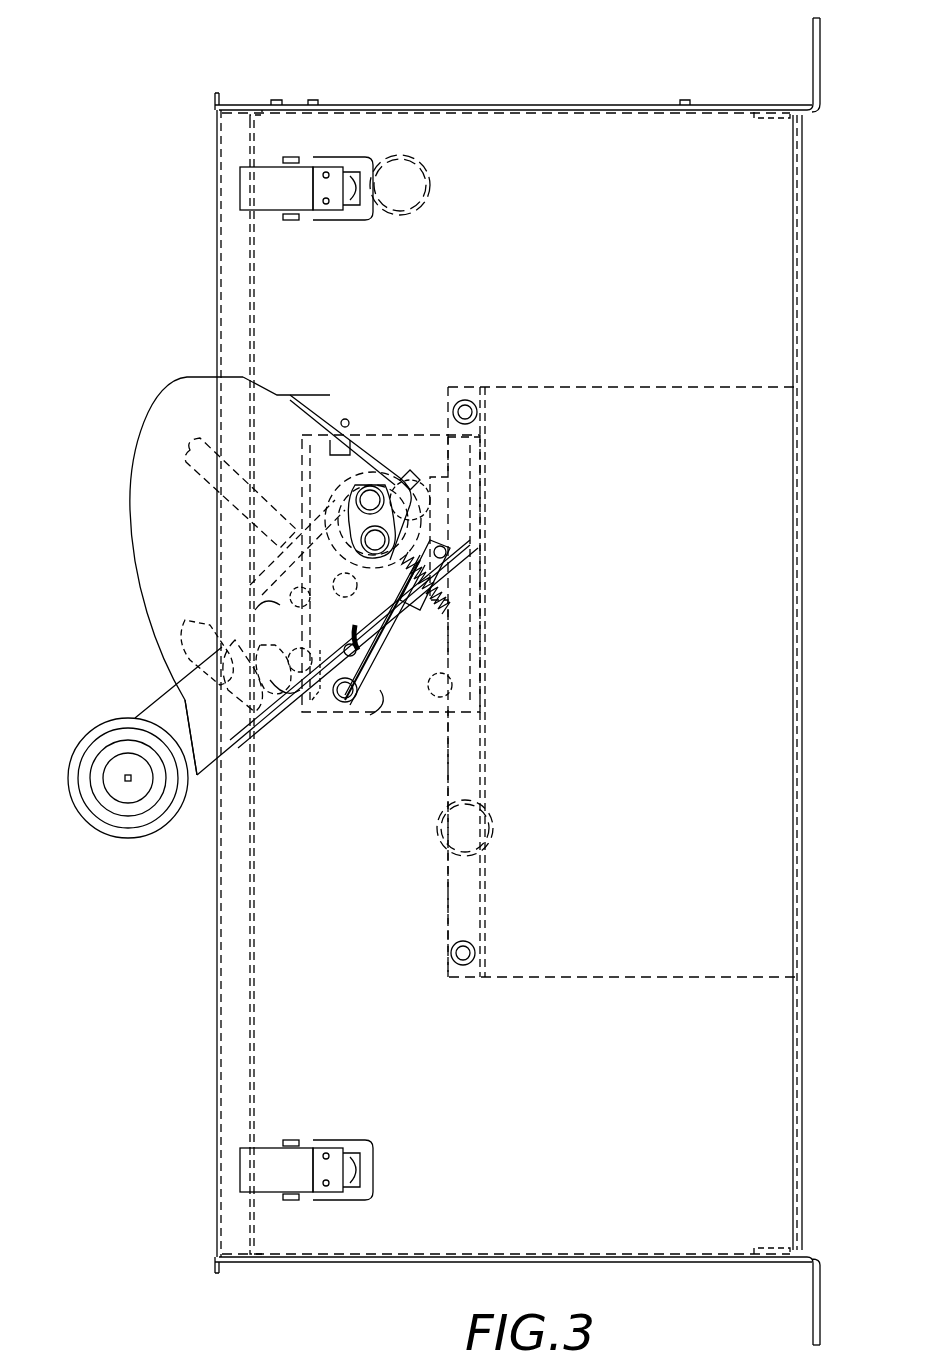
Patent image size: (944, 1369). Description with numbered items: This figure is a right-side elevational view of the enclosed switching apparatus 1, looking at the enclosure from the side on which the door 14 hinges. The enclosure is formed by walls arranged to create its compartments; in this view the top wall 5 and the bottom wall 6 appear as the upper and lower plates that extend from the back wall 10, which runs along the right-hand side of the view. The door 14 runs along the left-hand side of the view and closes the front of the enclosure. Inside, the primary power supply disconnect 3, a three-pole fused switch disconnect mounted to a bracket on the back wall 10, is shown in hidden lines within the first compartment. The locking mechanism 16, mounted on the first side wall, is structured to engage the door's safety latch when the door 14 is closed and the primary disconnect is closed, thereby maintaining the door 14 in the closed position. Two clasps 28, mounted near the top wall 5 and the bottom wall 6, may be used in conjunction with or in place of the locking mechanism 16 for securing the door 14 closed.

The enclosed switching apparatus 1 is at (652, 90).
The primary power supply disconnect 3 is at (626, 378).
The top wall 5 is at (500, 102).
The bottom wall 6 is at (400, 1262).
The back wall 10 is at (806, 598).
The door 14 is at (230, 983).
The locking mechanism 16 is at (133, 617).
The clasps 28 is at (276, 204).